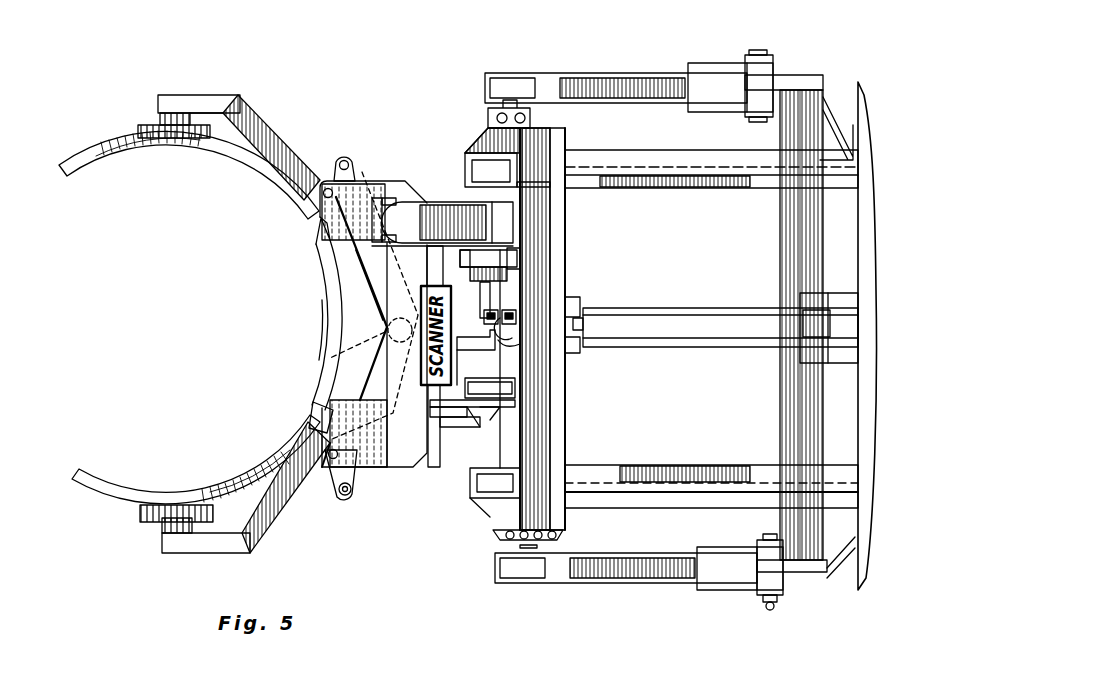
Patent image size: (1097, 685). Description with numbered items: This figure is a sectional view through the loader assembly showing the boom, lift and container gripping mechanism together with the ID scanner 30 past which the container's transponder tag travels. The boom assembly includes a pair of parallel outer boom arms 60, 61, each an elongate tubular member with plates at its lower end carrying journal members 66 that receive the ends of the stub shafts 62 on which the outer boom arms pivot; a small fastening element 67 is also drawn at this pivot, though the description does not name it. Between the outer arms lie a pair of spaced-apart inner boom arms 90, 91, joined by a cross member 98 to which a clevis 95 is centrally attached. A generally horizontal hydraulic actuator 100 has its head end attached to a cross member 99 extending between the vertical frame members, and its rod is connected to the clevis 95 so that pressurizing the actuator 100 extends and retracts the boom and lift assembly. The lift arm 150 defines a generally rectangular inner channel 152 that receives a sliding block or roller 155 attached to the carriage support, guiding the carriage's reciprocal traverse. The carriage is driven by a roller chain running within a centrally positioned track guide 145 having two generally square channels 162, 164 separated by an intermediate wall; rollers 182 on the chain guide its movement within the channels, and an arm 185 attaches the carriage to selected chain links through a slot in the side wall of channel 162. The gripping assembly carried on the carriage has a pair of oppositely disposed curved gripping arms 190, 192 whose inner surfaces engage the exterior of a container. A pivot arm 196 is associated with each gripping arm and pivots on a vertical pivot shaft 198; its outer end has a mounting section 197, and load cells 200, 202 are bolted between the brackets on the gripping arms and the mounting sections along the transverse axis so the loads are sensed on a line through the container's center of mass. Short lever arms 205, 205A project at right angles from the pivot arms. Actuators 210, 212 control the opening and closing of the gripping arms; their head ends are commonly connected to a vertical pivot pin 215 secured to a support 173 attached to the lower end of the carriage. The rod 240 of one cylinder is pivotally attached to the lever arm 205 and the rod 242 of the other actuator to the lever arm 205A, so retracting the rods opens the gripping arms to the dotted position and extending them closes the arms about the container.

The ID scanner 30 is at (442, 244).
The outer boom arm 60 is at (576, 575).
The outer boom arm 61 is at (628, 73).
The stub shaft 62 is at (766, 538).
The journal member 66 is at (780, 597).
The bolt 67 is at (774, 609).
The inner boom arm 90 is at (486, 507).
The inner boom arm 91 is at (463, 152).
The clevis 95 is at (578, 355).
The cross member 98 is at (550, 462).
The cross member 99 is at (857, 243).
The hydraulic actuator 100 is at (740, 302).
The track guide 145 is at (519, 359).
The lift arm 150 is at (518, 258).
The inner channel 152 is at (518, 392).
The sliding block or roller 155 is at (497, 427).
The track channel 162 is at (500, 306).
The track channel 164 is at (526, 325).
The support 173 is at (416, 460).
The roller 182 is at (528, 342).
The arm 185 is at (477, 357).
The gripping arm 190 is at (163, 500).
The gripping arm 192 is at (178, 147).
The pivot arm 196 is at (288, 140).
The mounting section 197 is at (200, 96).
The vertical pivot shaft 198 is at (318, 500).
The load cell 200 is at (160, 118).
The load cell 202 is at (162, 527).
The lever arm 205 is at (325, 470).
The lever arm 205A is at (341, 156).
The actuator 210 is at (350, 352).
The actuator 212 is at (355, 282).
The vertical pivot pin 215 is at (350, 312).
The rod 240 is at (322, 406).
The rod 242 is at (357, 240).